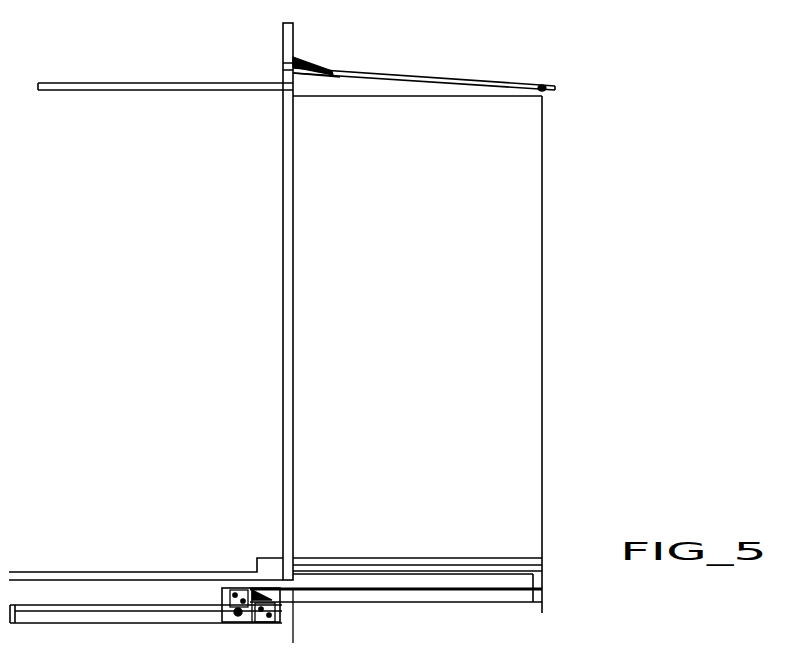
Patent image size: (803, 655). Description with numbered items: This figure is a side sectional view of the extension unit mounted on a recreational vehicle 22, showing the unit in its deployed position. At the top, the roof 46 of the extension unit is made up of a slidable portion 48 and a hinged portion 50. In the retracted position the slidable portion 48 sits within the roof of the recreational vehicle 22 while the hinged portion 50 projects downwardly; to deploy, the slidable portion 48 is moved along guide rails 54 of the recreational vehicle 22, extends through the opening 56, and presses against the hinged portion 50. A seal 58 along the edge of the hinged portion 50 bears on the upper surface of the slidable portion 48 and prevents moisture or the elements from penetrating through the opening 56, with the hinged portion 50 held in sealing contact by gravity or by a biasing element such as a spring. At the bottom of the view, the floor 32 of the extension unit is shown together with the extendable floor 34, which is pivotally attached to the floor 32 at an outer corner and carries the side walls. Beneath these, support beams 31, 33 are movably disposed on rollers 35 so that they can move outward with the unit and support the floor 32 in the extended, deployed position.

The recreational vehicle 22 is at (148, 334).
The support beam 31 is at (85, 612).
The floor 32 is at (514, 558).
The support beam 33 is at (383, 598).
The extendable floor 34 is at (505, 569).
The rollers 35 is at (252, 626).
The roof 46 is at (388, 66).
The slidable portion 48 is at (505, 82).
The hinged portion 50 is at (314, 64).
The guide rails 54 is at (127, 83).
The opening 56 is at (283, 62).
The seal 58 is at (330, 70).